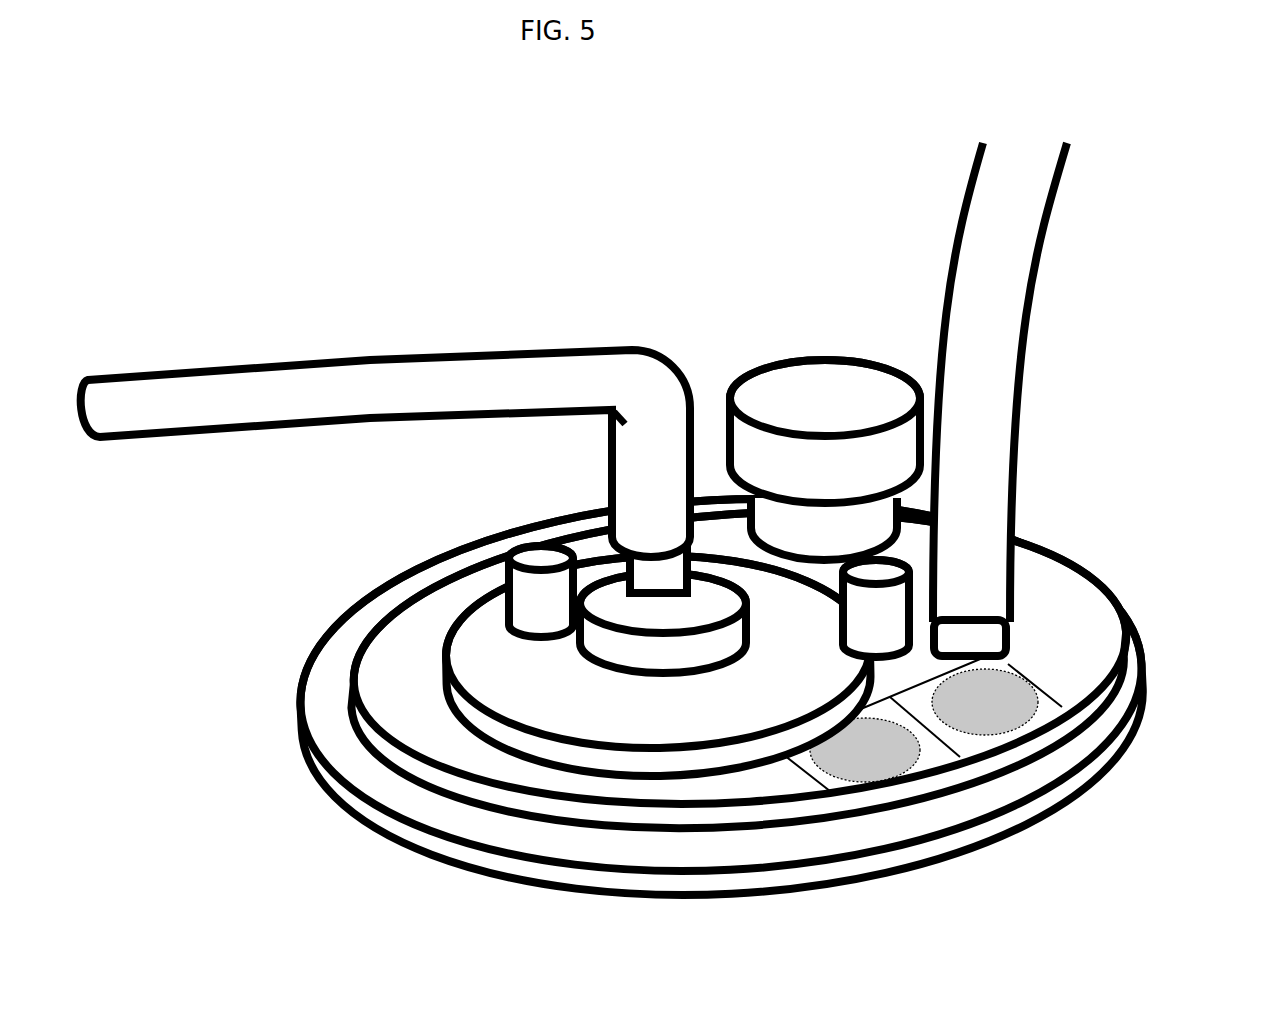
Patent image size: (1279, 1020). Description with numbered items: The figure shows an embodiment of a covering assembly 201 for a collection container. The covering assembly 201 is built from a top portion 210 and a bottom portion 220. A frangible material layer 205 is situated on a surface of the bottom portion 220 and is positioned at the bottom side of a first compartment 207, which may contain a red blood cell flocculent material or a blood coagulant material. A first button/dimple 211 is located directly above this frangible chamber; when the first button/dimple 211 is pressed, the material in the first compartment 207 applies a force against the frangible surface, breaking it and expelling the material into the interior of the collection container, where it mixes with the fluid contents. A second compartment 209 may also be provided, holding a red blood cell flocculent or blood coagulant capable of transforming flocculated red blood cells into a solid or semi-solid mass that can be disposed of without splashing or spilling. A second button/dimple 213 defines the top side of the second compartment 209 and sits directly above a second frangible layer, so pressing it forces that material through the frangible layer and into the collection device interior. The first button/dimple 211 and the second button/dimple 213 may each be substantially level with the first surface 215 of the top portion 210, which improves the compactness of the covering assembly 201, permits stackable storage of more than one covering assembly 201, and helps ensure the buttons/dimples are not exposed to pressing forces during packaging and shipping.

The covering assembly 201 is at (436, 298).
The frangible material layer 205 is at (966, 760).
The first compartment 207 is at (1007, 667).
The second compartment 209 is at (827, 780).
The top portion 210 is at (420, 627).
The first button/dimple 211 is at (1045, 727).
The second button/dimple 213 is at (938, 776).
The first surface 215 is at (1042, 604).
The bottom portion 220 is at (596, 897).